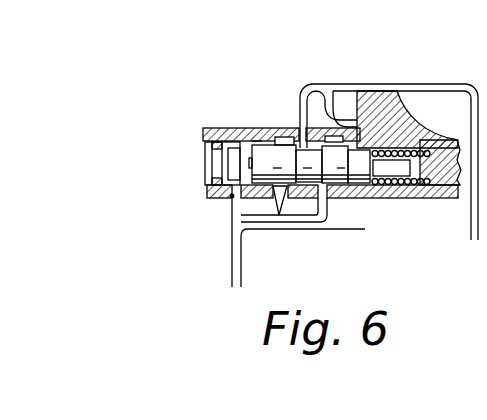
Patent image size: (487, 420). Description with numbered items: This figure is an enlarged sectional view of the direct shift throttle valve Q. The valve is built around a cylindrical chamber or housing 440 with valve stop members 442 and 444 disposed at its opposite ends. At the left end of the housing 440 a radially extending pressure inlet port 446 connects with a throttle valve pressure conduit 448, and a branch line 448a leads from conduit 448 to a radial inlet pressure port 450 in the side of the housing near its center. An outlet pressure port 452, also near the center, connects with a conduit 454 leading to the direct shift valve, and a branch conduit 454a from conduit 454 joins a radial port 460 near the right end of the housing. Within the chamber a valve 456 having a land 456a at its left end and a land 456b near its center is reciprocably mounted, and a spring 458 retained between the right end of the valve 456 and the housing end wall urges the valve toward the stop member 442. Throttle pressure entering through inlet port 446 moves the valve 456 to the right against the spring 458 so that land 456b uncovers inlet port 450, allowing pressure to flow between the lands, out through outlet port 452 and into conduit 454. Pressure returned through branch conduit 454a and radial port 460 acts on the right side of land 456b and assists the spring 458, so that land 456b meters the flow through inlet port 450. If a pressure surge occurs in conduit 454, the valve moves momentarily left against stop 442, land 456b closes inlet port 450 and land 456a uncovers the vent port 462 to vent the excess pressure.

The cylindrical chamber or housing 440 is at (240, 222).
The valve stop member 442 is at (230, 155).
The valve stop member 444 is at (425, 195).
The pressure inlet port 446 is at (231, 197).
The throttle valve pressure conduit 448 is at (232, 279).
The branch line 448a is at (265, 232).
The radial inlet pressure port 450 is at (337, 192).
The outlet pressure port 452 is at (308, 162).
The conduit 454 is at (383, 83).
The branch conduit 454a is at (333, 107).
The valve 456 is at (272, 153).
The land 456a is at (257, 140).
The land 456b is at (361, 187).
The spring 458 is at (422, 184).
The radial port 460 is at (414, 120).
The vent port 462 is at (270, 214).
The direct shift throttle valve Q is at (243, 90).